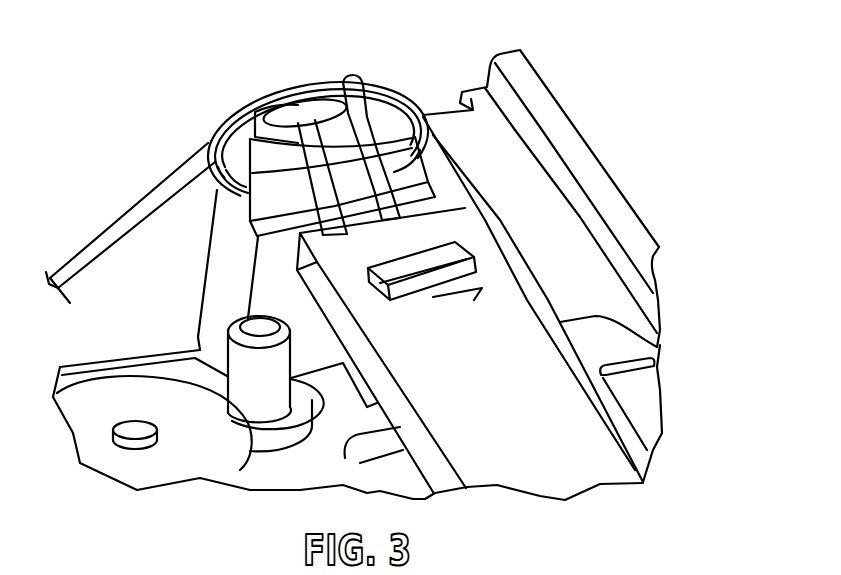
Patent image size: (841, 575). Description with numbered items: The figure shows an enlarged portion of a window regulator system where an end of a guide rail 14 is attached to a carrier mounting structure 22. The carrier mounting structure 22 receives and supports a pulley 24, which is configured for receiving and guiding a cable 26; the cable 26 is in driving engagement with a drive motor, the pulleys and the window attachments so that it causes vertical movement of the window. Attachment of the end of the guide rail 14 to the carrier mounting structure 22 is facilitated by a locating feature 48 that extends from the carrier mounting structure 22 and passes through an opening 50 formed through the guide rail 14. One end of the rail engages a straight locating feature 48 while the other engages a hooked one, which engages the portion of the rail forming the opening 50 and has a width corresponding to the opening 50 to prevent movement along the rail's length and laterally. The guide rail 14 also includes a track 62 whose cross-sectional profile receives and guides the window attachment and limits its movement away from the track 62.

The guide rail 14 is at (603, 163).
The carrier mounting structure 22 is at (383, 118).
The pulley 24 is at (303, 80).
The cable 26 is at (131, 222).
The locating feature 48 is at (398, 270).
The opening 50 is at (433, 297).
The track 62 is at (551, 233).